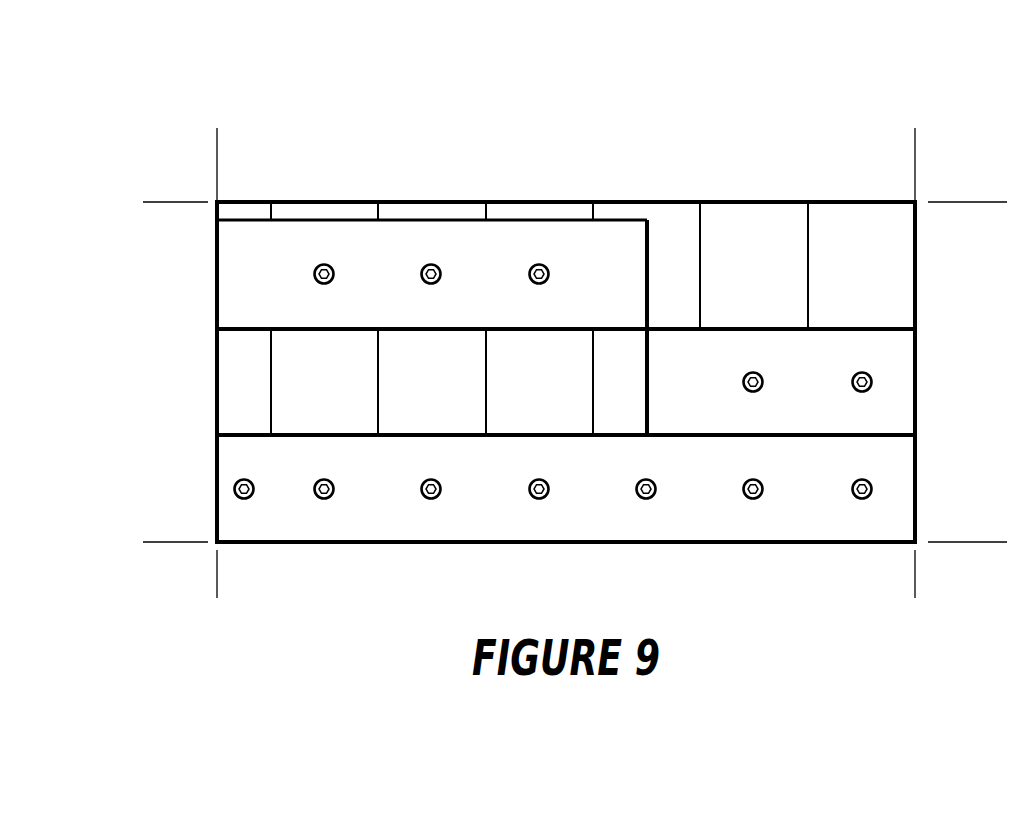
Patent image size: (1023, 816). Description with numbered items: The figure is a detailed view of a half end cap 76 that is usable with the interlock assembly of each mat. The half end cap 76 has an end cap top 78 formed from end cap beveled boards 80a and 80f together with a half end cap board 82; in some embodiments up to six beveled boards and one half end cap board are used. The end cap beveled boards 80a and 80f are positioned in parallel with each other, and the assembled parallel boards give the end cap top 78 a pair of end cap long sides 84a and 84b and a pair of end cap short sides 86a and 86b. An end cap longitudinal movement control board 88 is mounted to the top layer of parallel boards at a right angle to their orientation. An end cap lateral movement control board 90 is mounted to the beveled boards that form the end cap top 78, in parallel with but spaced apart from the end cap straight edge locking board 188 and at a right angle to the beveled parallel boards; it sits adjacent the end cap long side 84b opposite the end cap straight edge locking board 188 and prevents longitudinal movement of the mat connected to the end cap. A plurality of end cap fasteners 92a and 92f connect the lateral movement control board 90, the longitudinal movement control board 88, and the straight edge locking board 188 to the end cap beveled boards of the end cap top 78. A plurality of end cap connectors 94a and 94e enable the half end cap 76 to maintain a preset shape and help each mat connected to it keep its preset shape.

The half end cap 76 is at (968, 123).
The end cap top 78 is at (779, 194).
The end cap beveled board 80a is at (327, 201).
The end cap beveled board 80f is at (865, 198).
The half end cap board 82 is at (238, 201).
The end cap long side 84a is at (915, 137).
The end cap long side 84b is at (915, 589).
The end cap short side 86a is at (151, 202).
The end cap short side 86b is at (998, 202).
The end cap longitudinal movement control board 88 is at (882, 512).
The end cap lateral movement control board 90 is at (250, 265).
The end cap fastener 92a is at (244, 497).
The end cap fastener 92f is at (862, 497).
The end cap connector 94a is at (328, 269).
The end cap connector 94e is at (868, 377).
The end cap straight edge locking board 188 is at (882, 402).